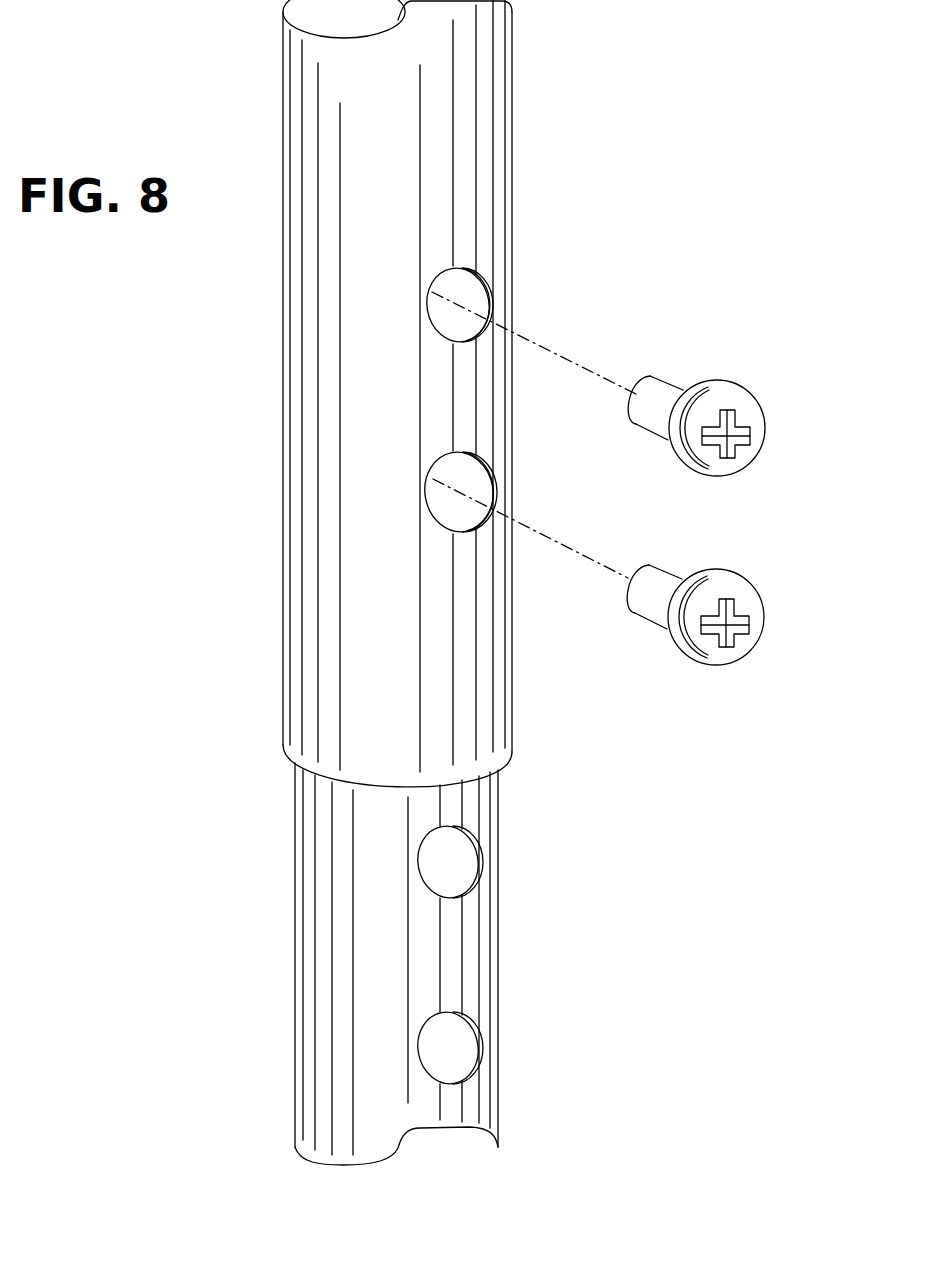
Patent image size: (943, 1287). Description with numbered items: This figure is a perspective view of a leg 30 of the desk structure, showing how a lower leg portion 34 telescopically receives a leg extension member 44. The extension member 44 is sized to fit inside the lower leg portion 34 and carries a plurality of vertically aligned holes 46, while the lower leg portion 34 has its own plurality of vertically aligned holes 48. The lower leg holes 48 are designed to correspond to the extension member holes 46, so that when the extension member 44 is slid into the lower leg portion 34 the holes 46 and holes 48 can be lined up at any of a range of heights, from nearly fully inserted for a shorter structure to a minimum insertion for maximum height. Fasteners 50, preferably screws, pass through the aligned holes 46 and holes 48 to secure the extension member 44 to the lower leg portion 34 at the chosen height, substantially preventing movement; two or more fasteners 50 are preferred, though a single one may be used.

The leg 30 is at (390, 393).
The lower leg portion 34 is at (305, 430).
The lower leg holes 48 is at (475, 291).
The fasteners 50 is at (742, 409).
The leg extension member 44 is at (396, 964).
The extension member holes 46 is at (442, 862).